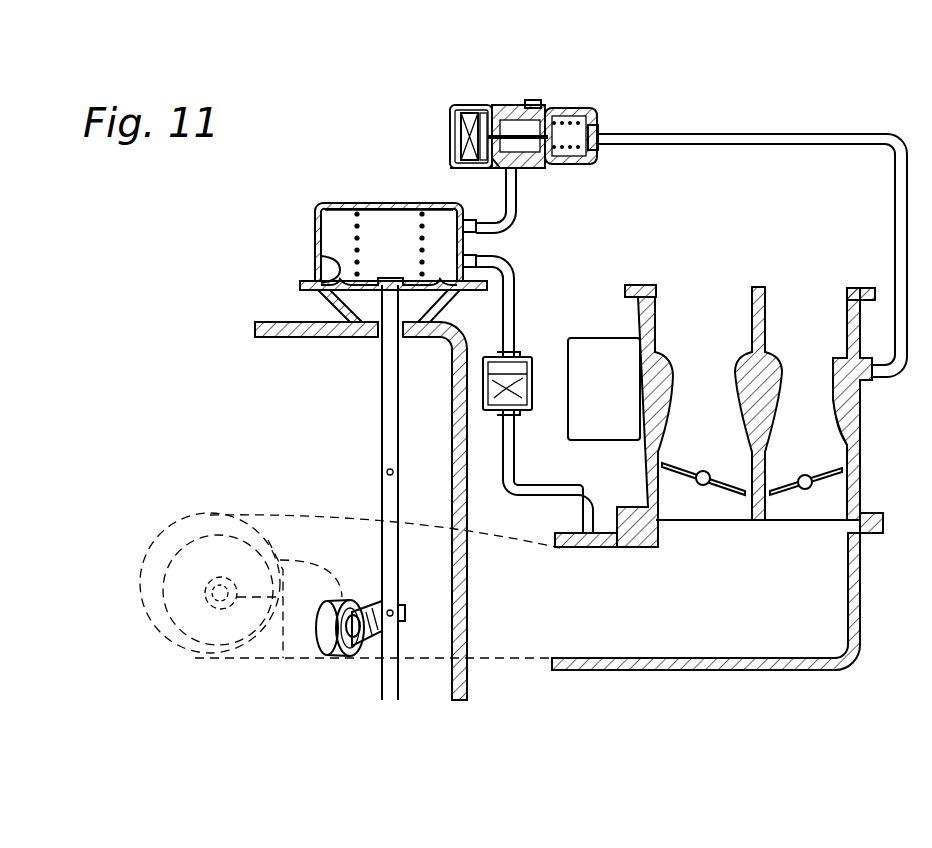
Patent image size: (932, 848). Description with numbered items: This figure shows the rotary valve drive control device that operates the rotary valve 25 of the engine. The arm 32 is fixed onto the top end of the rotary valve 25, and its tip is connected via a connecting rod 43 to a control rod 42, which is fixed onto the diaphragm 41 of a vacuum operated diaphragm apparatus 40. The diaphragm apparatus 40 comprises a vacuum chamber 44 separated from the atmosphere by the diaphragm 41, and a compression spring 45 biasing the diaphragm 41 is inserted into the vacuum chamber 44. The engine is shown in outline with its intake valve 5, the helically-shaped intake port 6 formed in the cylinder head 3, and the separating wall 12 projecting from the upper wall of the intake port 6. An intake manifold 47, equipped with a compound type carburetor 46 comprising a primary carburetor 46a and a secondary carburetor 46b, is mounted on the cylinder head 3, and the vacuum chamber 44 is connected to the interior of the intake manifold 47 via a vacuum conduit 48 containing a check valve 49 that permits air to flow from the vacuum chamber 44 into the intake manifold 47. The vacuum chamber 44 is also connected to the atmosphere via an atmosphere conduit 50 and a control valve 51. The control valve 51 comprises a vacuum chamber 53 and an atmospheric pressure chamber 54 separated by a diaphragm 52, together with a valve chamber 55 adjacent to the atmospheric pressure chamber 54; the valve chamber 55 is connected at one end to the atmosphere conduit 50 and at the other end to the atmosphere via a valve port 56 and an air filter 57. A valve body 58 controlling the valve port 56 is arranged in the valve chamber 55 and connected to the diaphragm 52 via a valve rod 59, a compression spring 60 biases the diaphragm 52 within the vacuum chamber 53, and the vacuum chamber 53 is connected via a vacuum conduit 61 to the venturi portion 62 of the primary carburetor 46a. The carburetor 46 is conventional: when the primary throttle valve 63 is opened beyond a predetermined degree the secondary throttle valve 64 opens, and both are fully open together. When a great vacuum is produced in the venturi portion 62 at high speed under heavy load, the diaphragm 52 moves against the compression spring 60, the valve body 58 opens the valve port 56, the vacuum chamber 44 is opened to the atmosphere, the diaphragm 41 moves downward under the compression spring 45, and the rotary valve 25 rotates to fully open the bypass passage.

The cylinder head 3 is at (460, 688).
The intake valve 5 is at (215, 627).
The helically-shaped intake port 6 is at (305, 530).
The separating wall 12 is at (268, 540).
The rotary valve 25 is at (334, 670).
The arm 32 is at (372, 602).
The vacuum operated diaphragm apparatus 40 is at (325, 200).
The diaphragm 41 is at (321, 265).
The control rod 42 is at (399, 403).
The connecting rod 43 is at (382, 684).
The vacuum chamber 44 is at (395, 205).
The compression spring 45 is at (362, 228).
The compound type carburetor 46 is at (610, 283).
The primary carburetor 46a is at (808, 285).
The secondary carburetor 46b is at (703, 285).
The intake manifold 47 is at (688, 671).
The vacuum conduit 48 is at (514, 302).
The check valve 49 is at (533, 372).
The atmosphere conduit 50 is at (517, 223).
The control valve 51 is at (495, 100).
The diaphragm 52 is at (565, 112).
The vacuum chamber 53 is at (594, 107).
The atmospheric pressure chamber 54 is at (540, 108).
The valve chamber 55 is at (508, 115).
The valve port 56 is at (482, 105).
The air filter 57 is at (450, 133).
The valve body 58 is at (497, 156).
The valve rod 59 is at (540, 168).
The compression spring 60 is at (592, 164).
The vacuum conduit 61 is at (737, 134).
The venturi portion 62 is at (808, 358).
The primary throttle valve 63 is at (822, 478).
The secondary throttle valve 64 is at (728, 477).